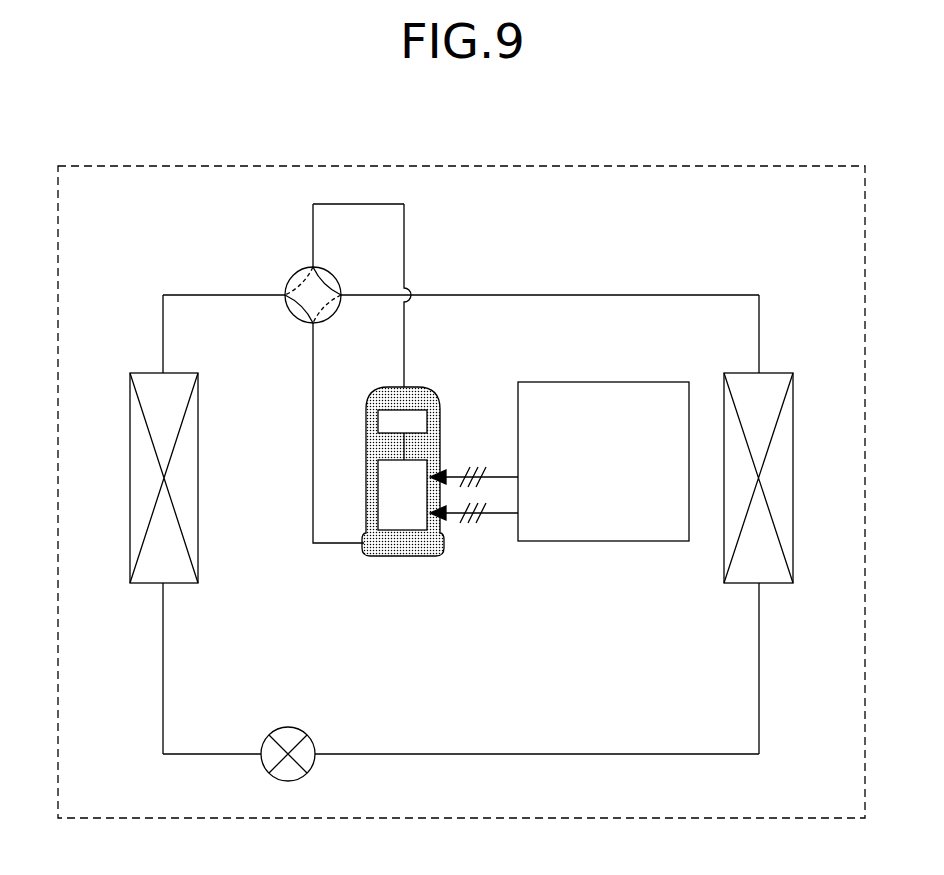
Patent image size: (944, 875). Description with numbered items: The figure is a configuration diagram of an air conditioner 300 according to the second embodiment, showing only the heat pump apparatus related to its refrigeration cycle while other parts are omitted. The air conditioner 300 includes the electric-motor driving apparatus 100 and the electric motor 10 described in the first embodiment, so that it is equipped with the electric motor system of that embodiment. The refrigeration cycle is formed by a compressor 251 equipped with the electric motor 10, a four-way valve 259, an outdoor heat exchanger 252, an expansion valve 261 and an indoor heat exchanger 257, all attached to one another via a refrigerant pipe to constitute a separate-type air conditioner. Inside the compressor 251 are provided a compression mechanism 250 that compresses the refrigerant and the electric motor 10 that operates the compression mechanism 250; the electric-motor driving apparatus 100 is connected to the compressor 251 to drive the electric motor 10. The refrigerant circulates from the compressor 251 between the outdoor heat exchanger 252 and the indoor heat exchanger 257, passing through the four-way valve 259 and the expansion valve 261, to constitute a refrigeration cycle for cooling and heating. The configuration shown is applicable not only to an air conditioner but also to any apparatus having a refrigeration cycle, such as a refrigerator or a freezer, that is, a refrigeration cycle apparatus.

The air conditioner 300 is at (778, 164).
The four-way valve 259 is at (323, 270).
The outdoor heat exchanger 252 is at (192, 354).
The indoor heat exchanger 257 is at (784, 354).
The expansion valve 261 is at (308, 710).
The electric motor 10 is at (435, 468).
The compressor 251 is at (414, 386).
The compression mechanism 250 is at (420, 421).
The electric-motor driving apparatus 100 is at (618, 382).